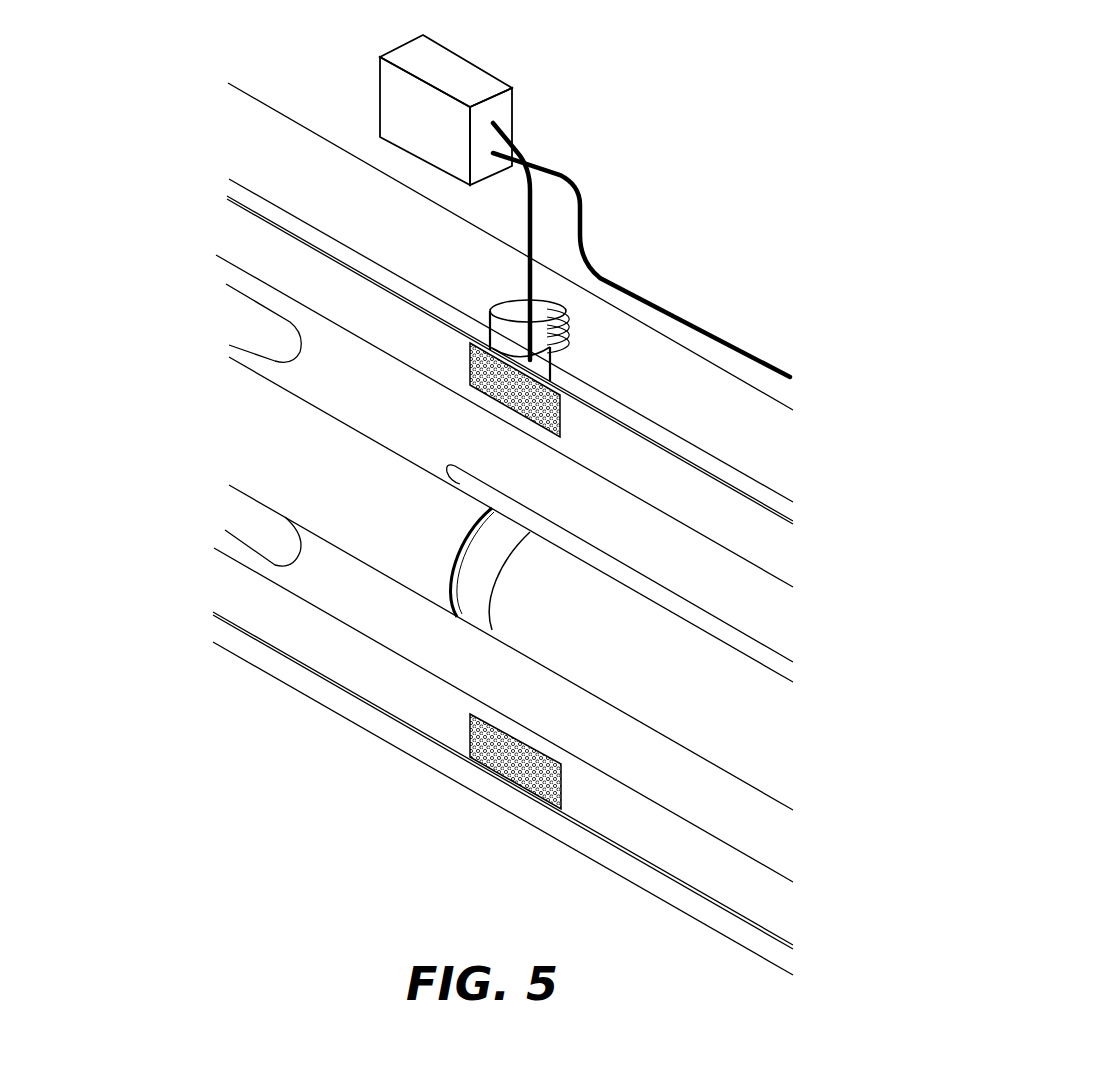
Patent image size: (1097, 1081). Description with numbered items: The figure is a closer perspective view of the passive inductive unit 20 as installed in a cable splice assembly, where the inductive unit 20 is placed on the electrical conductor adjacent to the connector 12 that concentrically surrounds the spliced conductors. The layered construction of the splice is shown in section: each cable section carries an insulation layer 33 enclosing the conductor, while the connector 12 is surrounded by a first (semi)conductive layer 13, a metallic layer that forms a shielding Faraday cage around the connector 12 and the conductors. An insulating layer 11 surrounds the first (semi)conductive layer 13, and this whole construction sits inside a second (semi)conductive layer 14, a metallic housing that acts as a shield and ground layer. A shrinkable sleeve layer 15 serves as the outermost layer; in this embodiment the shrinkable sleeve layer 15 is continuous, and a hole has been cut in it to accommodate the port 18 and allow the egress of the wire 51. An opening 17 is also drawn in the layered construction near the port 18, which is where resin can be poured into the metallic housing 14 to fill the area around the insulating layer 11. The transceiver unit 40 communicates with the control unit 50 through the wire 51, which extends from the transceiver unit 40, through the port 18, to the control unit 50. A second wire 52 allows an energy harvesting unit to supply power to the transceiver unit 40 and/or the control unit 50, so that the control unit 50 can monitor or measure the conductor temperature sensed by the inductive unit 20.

The insulating layer 11 is at (350, 393).
The connector 12 is at (586, 648).
The first (semi)conductive layer 13 is at (520, 517).
The second (semi)conductive layer 14 is at (683, 457).
The shrinkable sleeve layer 15 is at (634, 387).
The slot 17 is at (293, 290).
The port 18 is at (507, 323).
The passive inductive unit 20 is at (460, 572).
The insulation layer 33 is at (314, 500).
The transceiver unit 40 is at (512, 758).
The control unit 50 is at (456, 73).
The wire 51 is at (527, 185).
The wire 52 is at (580, 212).